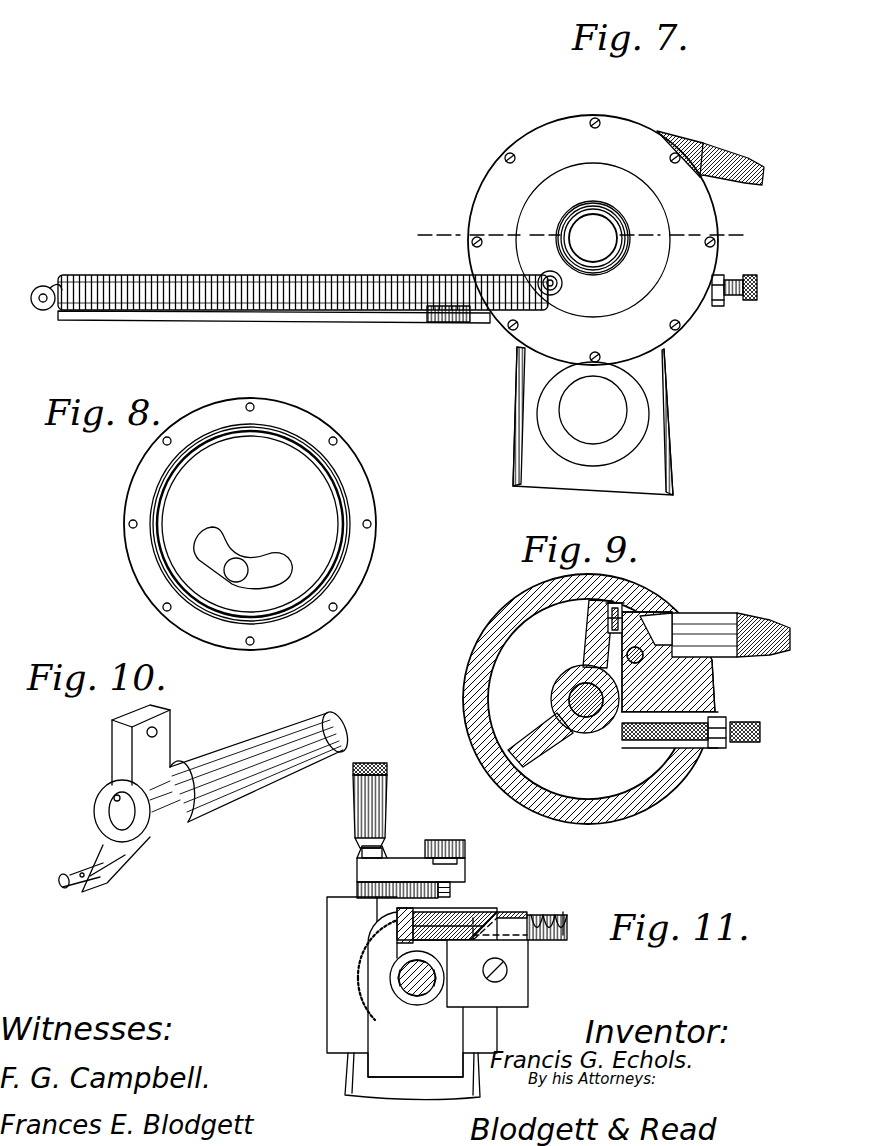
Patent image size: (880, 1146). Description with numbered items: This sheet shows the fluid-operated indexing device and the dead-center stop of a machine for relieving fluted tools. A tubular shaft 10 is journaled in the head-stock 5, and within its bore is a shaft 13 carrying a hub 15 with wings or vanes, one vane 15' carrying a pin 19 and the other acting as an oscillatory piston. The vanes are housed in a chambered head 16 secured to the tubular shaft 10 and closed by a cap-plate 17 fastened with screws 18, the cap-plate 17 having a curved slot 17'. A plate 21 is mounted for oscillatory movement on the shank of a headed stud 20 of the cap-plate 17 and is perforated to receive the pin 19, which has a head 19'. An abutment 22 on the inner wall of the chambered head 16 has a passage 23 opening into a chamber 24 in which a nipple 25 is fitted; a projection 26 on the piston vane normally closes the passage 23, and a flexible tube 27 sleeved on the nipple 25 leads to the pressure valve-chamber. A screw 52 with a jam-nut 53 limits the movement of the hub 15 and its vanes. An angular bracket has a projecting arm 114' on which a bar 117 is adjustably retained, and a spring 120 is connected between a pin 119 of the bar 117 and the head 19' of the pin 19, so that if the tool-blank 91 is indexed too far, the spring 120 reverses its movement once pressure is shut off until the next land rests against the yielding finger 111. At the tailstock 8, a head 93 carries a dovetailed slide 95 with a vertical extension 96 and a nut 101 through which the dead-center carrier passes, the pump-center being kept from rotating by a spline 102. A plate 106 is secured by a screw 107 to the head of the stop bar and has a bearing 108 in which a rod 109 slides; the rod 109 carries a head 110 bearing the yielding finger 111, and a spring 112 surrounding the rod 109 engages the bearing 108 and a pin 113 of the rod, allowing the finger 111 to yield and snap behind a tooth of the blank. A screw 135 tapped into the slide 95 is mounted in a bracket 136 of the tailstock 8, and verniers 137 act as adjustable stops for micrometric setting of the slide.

In FIG. 7, the head-stock 5 is at (583, 359).
In FIG. 11, the tailstock 8 is at (412, 1079).
In FIG. 10, the tubular shaft 10 is at (318, 712).
In FIG. 9, the shaft 13 is at (590, 720).
In FIG. 10, the shaft 13 is at (120, 812).
In FIG. 9, the hub 15 is at (545, 667).
In FIG. 10, the hub 15 is at (202, 830).
In FIG. 9, the wing or vane 15' is at (540, 734).
In FIG. 10, the wing or vane 15' is at (139, 864).
In FIG. 9, the chambered head 16 is at (480, 642).
In FIG. 7, the cap-plate 17 is at (593, 240).
In FIG. 8, the cap-plate 17 is at (250, 524).
In FIG. 8, the curved slot 17' is at (242, 545).
In FIG. 7, the screws 18 is at (513, 154).
In FIG. 10, the pin 19 is at (80, 857).
In FIG. 7, the head 19' is at (541, 260).
In FIG. 10, the head 19' is at (49, 861).
In FIG. 7, the headed stud 20 is at (593, 238).
In FIG. 7, the plate 21 is at (593, 223).
In FIG. 8, the plate 21 is at (262, 565).
In FIG. 9, the abutment 22 is at (675, 677).
In FIG. 9, the passage 23 is at (626, 621).
In FIG. 9, the chamber 24 is at (658, 621).
In FIG. 9, the nipple 25 is at (692, 628).
In FIG. 9, the projection 26 is at (600, 602).
In FIG. 10, the projection 26 is at (157, 727).
In FIG. 9, the flexible tube 27 is at (768, 636).
In FIG. 7, the screw 52 is at (736, 297).
In FIG. 9, the screw 52 is at (652, 742).
In FIG. 7, the jam-nut 53 is at (714, 307).
In FIG. 9, the jam-nut 53 is at (725, 749).
In FIG. 11, the tool-blank 91 is at (414, 997).
In FIG. 11, the head 93 is at (545, 895).
In FIG. 11, the dovetailed slide 95 is at (377, 903).
In FIG. 11, the vertical extension 96 is at (380, 1078).
In FIG. 11, the nut 101 is at (356, 980).
In FIG. 11, the spline 102 is at (420, 998).
In FIG. 11, the plate 106 is at (515, 1000).
In FIG. 11, the screw 107 is at (508, 973).
In FIG. 11, the bearing 108 is at (448, 912).
In FIG. 11, the rod 109 is at (480, 915).
In FIG. 11, the head 110 is at (382, 878).
In FIG. 11, the yielding finger or spring-stop 111 is at (398, 946).
In FIG. 11, the spring 112 is at (555, 937).
In FIG. 11, the pin 113 is at (566, 914).
In FIG. 7, the projecting arm 114' is at (449, 336).
In FIG. 7, the bar 117 is at (397, 314).
In FIG. 7, the pin 119 is at (40, 312).
In FIG. 7, the spring 120 is at (282, 268).
In FIG. 11, the screw 135 is at (448, 890).
In FIG. 11, the bracket 136 is at (392, 858).
In FIG. 11, the verniers 137 is at (362, 802).